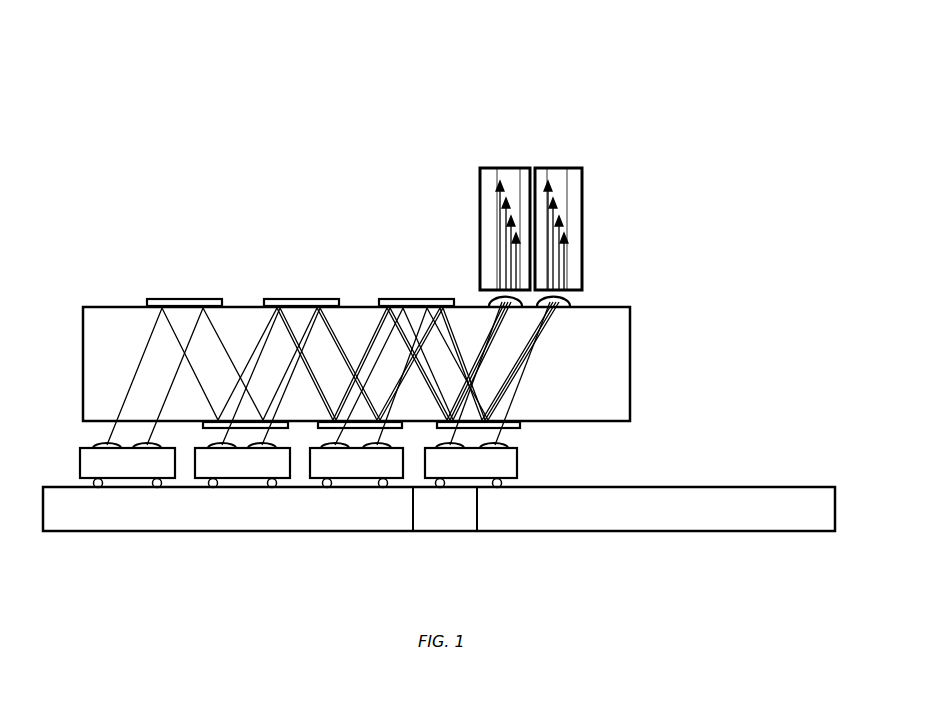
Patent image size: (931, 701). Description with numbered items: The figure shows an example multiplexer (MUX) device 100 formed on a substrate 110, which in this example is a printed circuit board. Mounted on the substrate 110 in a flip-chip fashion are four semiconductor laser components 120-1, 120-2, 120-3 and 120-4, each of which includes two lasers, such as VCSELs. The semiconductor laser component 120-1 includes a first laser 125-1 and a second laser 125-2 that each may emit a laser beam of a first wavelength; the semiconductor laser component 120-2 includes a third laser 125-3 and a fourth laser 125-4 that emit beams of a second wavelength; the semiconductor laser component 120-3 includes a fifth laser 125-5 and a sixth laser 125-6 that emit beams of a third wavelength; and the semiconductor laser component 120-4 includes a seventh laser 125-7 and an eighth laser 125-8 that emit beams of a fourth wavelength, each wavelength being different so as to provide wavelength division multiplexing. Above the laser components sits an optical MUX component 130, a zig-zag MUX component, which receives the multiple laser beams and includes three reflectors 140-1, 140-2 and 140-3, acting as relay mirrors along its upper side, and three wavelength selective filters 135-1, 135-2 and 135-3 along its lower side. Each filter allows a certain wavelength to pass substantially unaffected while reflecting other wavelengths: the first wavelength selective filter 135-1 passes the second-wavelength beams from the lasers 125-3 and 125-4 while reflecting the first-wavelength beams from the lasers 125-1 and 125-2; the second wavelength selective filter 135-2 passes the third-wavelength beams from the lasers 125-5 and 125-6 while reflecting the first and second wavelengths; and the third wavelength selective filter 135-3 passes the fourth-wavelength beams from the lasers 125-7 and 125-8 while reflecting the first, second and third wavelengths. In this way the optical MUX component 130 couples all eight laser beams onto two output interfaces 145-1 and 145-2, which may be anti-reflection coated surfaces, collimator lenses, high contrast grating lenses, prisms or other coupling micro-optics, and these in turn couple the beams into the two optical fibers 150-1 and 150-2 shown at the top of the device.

The multiplexer device 100 is at (92, 70).
The substrate 110 is at (819, 522).
The semiconductor laser component 120-1 is at (122, 480).
The semiconductor laser component 120-2 is at (235, 480).
The semiconductor laser component 120-3 is at (344, 480).
The semiconductor laser component 120-4 is at (482, 482).
The first laser 125-1 is at (110, 417).
The second laser 125-2 is at (152, 417).
The third laser 125-3 is at (218, 415).
The fourth laser 125-4 is at (263, 415).
The fifth laser 125-5 is at (332, 444).
The sixth laser 125-6 is at (378, 444).
The seventh laser 125-7 is at (470, 447).
The eighth laser 125-8 is at (505, 450).
The optical MUX component 130 is at (613, 410).
The first wavelength selective filter 135-1 is at (203, 427).
The second wavelength selective filter 135-2 is at (392, 424).
The third wavelength selective filter 135-3 is at (522, 424).
The reflector 140-1 is at (166, 300).
The reflector 140-2 is at (284, 300).
The reflector 140-3 is at (398, 300).
The output interface 145-1 is at (490, 300).
The output interface 145-2 is at (572, 300).
The optical fiber 150-1 is at (480, 170).
The optical fiber 150-2 is at (551, 170).